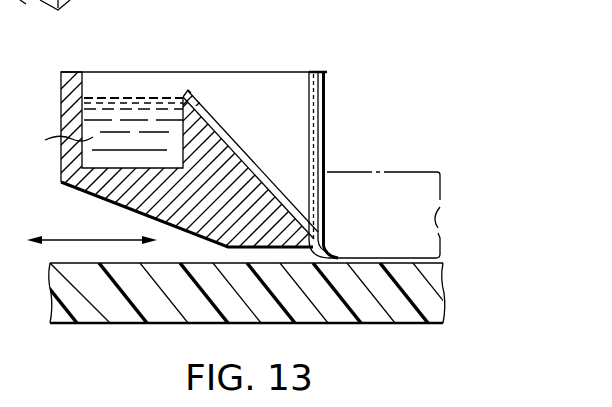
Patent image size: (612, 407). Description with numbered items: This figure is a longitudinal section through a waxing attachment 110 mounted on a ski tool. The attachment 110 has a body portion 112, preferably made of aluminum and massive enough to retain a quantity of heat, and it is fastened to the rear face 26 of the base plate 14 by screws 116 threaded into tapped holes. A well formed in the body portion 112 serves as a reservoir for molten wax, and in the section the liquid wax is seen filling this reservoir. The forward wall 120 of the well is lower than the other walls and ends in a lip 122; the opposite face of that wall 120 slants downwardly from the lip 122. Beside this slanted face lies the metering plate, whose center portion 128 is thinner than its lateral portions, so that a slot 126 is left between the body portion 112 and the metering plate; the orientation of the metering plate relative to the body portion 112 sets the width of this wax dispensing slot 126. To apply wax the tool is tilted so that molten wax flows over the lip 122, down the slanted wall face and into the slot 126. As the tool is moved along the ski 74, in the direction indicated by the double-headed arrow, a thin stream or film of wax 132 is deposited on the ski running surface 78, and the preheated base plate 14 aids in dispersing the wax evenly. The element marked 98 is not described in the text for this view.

The base plate 14 is at (398, 197).
The rear face 26 is at (338, 204).
The ski 74 is at (236, 310).
The ski running surface 78 is at (183, 262).
The support 98 is at (25, 388).
The waxing attachment 110 is at (340, 50).
The body portion 112 is at (131, 207).
The screws 116 is at (35, 14).
The forward wall 120 is at (199, 115).
The lip 122 is at (183, 96).
The slot 126 is at (314, 229).
The center portion 128 is at (323, 141).
The film of wax 132 is at (330, 258).